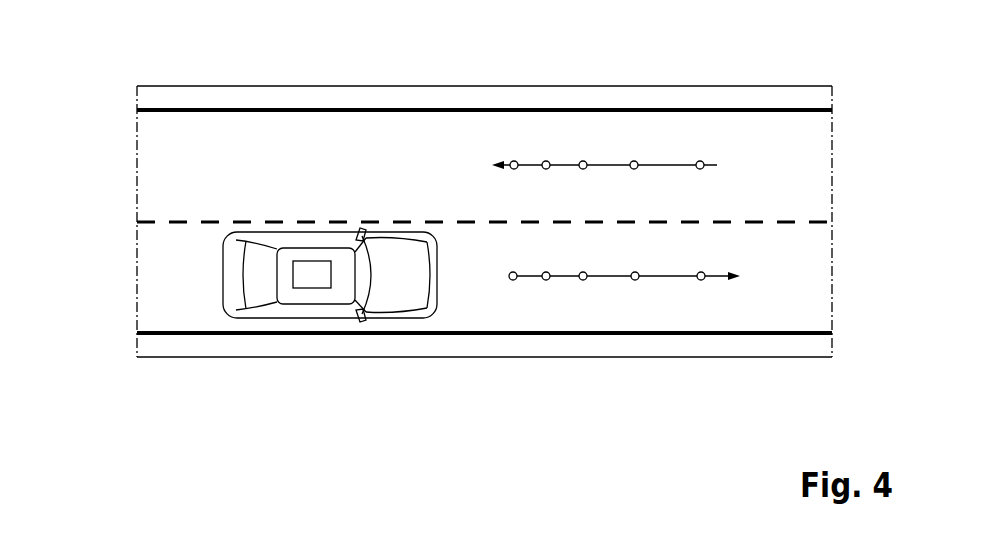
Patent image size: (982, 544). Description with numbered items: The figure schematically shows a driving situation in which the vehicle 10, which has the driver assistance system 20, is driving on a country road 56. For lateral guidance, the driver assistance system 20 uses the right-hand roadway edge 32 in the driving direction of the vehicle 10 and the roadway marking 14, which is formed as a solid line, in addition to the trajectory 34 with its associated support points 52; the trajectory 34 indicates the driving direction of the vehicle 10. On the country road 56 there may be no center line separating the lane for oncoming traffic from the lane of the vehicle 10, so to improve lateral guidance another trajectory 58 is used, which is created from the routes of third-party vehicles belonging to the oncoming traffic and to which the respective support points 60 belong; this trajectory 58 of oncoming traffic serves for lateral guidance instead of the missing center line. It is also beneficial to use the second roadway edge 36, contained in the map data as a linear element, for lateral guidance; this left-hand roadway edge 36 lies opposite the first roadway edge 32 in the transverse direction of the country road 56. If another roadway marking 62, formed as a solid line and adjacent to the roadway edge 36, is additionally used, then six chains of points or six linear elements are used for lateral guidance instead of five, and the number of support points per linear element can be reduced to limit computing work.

The country road 56 is at (96, 105).
The second roadway edge 36 is at (230, 86).
The roadway marking 62 is at (385, 109).
The roadway marking 14 is at (177, 334).
The roadway edge 32 is at (777, 357).
The support points 60 is at (514, 161).
The trajectory 58 is at (583, 161).
The trajectory 34 is at (683, 278).
The support points 52 is at (513, 281).
The vehicle 10 is at (330, 337).
The driver assistance system 20 is at (307, 280).